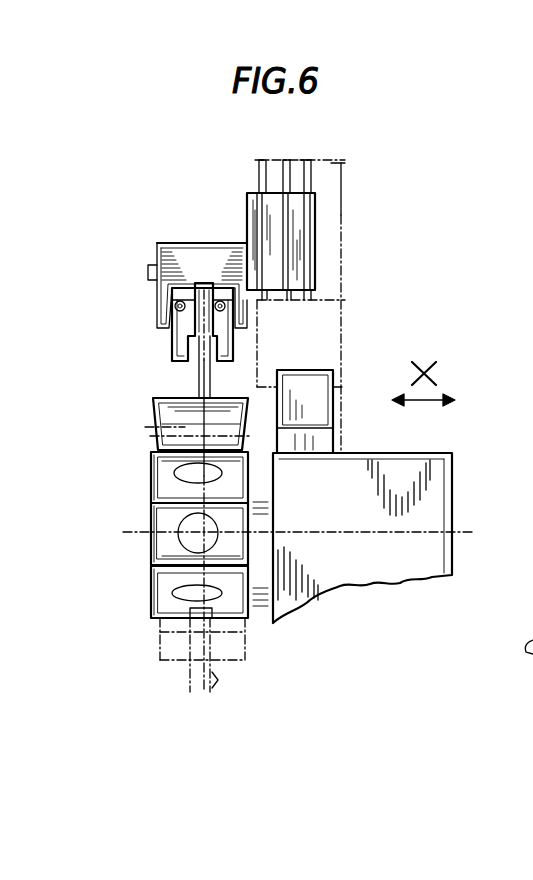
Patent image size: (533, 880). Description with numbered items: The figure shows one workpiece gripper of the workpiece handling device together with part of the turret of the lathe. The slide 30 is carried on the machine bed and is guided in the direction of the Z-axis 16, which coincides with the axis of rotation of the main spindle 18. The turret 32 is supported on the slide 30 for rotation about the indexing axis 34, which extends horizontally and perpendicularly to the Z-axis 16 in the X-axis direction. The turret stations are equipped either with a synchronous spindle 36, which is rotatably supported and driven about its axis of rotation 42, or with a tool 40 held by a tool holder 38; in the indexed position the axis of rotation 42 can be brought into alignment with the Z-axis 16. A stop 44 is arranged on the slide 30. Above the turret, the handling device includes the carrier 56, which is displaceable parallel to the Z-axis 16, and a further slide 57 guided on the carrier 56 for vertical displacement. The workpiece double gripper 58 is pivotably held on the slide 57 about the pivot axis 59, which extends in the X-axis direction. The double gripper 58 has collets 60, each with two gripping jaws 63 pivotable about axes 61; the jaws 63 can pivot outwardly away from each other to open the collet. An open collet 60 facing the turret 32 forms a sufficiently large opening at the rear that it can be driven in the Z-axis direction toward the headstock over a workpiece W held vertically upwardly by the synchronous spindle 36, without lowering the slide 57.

The Z-axis 16 is at (160, 524).
The main spindle 18 is at (527, 555).
The slide 30 is at (436, 448).
The turret 32 is at (150, 490).
The indexing axis 34 is at (352, 528).
The synchronous spindle 36 is at (160, 414).
The tool holder 38 is at (150, 600).
The tool 40 is at (212, 642).
The axis of rotation 42 is at (157, 422).
The stop 44 is at (333, 416).
The carrier 56 is at (354, 184).
The slide 57 is at (247, 210).
The workpiece double gripper 58 is at (157, 238).
The pivot axis 59 is at (152, 266).
The collet 60 is at (160, 351).
The axis 61 is at (224, 288).
The gripping jaw 63 is at (172, 360).
The workpiece W is at (180, 377).